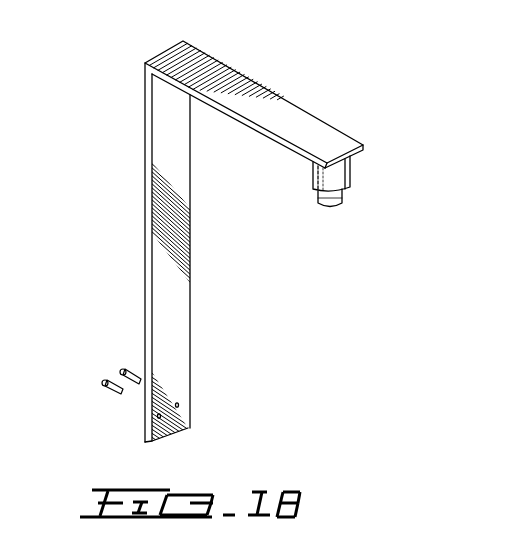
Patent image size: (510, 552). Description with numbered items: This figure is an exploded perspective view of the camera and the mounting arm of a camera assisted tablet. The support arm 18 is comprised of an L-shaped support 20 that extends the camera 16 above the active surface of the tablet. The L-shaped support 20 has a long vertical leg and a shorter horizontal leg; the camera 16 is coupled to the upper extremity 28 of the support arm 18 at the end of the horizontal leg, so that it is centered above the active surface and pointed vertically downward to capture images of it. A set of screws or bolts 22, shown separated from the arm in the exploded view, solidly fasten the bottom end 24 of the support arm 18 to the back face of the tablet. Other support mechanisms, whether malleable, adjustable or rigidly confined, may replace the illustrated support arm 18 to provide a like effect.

The support arm 18 is at (309, 59).
The L-shaped support 20 is at (163, 258).
The upper extremity 28 is at (361, 150).
The camera 16 is at (347, 195).
The screws or bolts 22 is at (105, 395).
The bottom end 24 is at (167, 435).